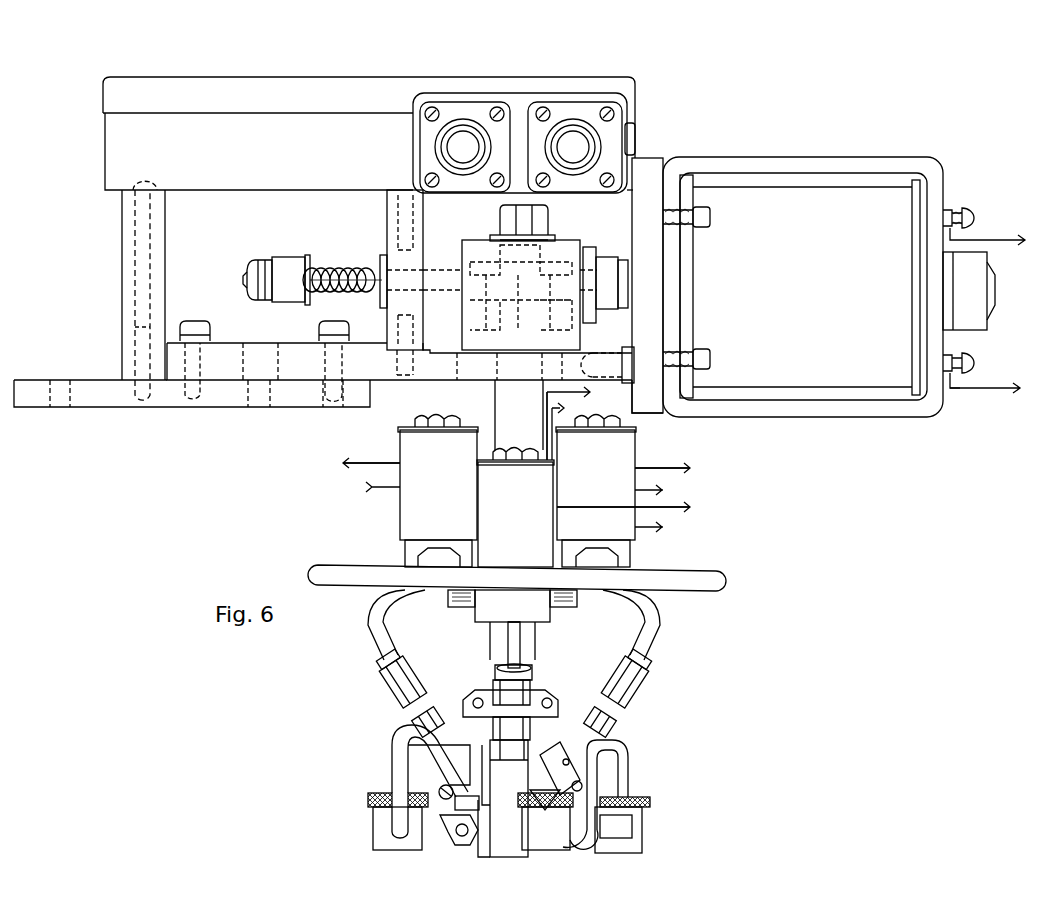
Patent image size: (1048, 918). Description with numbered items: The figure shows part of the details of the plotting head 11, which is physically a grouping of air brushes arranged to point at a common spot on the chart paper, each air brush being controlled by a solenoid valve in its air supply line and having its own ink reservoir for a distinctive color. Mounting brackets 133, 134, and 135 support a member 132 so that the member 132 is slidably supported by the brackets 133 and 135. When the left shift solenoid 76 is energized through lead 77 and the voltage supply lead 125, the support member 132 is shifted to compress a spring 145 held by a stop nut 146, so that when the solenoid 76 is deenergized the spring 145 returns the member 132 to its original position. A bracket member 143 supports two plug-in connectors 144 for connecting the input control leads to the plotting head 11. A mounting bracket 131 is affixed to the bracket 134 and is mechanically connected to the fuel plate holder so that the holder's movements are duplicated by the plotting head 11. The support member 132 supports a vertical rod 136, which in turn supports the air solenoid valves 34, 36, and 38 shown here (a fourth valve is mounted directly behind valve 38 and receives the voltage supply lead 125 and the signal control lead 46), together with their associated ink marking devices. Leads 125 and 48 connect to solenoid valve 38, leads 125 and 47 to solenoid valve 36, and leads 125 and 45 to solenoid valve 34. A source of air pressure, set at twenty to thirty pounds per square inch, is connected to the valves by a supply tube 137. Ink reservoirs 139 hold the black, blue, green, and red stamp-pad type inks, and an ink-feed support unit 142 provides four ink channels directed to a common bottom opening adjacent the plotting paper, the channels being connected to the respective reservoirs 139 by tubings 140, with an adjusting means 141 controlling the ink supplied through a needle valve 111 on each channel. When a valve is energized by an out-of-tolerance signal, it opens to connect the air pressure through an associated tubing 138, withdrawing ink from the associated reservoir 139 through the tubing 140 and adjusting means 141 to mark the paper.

The plotting head 11 is at (496, 222).
The air solenoid valve 34 is at (408, 528).
The air solenoid valve 36 is at (632, 446).
The air solenoid valve 38 is at (488, 490).
The signal control lead 45 is at (388, 465).
The signal control lead 46 is at (546, 412).
The signal control lead 47 is at (660, 470).
The signal control lead 48 is at (565, 507).
The left shift solenoid 76 is at (880, 190).
The lead 77 is at (965, 390).
The needle valve 111 is at (495, 848).
The voltage supply lead 125 is at (983, 240).
The mounting bracket 131 is at (226, 408).
The support member 132 is at (490, 312).
The mounting bracket 133 is at (652, 160).
The mounting bracket 134 is at (478, 374).
The mounting bracket 135 is at (420, 240).
The vertical rod 136 is at (506, 398).
The supply tube 137 is at (708, 571).
The tubing 138 is at (375, 634).
The ink reservoir 139 is at (378, 829).
The tubing 140 is at (406, 735).
The adjusting means 141 is at (478, 838).
The ink-feed support unit 142 is at (422, 758).
The bracket member 143 is at (306, 192).
The plug-in connector 144 is at (548, 104).
The spring 145 is at (365, 262).
The stop nut 146 is at (291, 262).